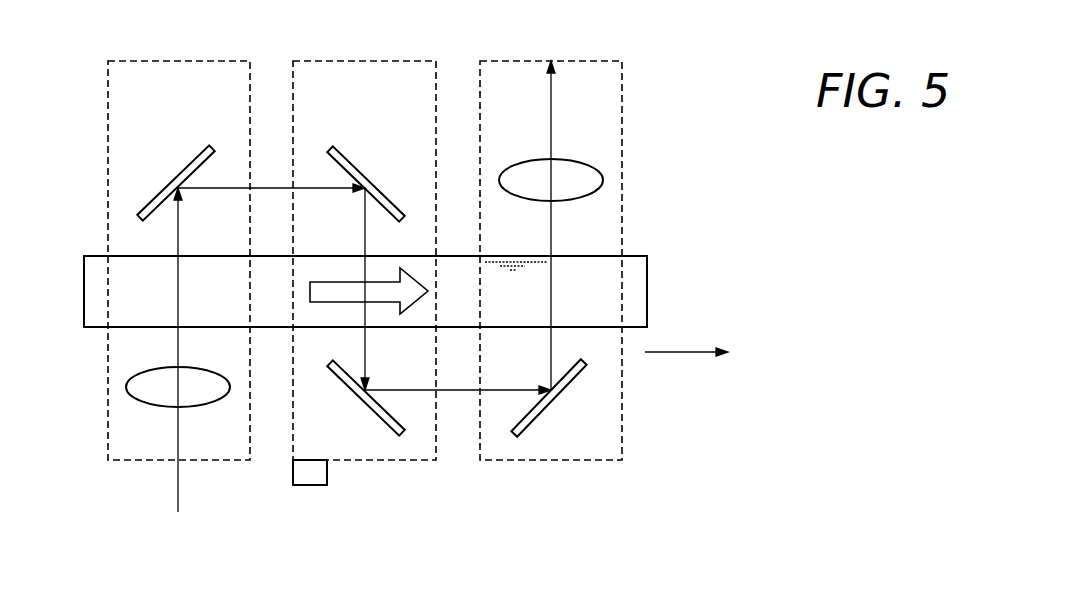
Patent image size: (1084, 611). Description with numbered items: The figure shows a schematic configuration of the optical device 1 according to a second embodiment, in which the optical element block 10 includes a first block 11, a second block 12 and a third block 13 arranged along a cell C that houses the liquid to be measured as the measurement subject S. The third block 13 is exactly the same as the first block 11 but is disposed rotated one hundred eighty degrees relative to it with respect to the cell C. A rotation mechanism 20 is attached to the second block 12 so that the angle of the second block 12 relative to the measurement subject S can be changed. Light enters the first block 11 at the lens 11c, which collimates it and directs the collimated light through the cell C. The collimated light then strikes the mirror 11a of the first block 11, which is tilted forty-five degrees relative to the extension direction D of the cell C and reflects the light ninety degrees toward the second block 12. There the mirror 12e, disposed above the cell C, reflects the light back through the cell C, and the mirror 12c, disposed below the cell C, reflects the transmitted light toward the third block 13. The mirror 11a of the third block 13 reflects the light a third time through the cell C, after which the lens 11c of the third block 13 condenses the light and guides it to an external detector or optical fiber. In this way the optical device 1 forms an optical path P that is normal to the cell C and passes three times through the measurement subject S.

The optical device 1 is at (392, 563).
The optical element block 10 is at (355, 300).
The first block 11 is at (142, 460).
The second block 12 is at (378, 460).
The third block 13 is at (557, 460).
The mirror 11a is at (190, 160).
The lens 11c is at (145, 373).
The mirror 12e is at (355, 162).
The mirror 12c is at (338, 388).
The rotation mechanism 20 is at (312, 473).
The optical path P is at (552, 95).
The cell C is at (647, 285).
The measurement subject S is at (462, 298).
The extension direction D is at (686, 364).